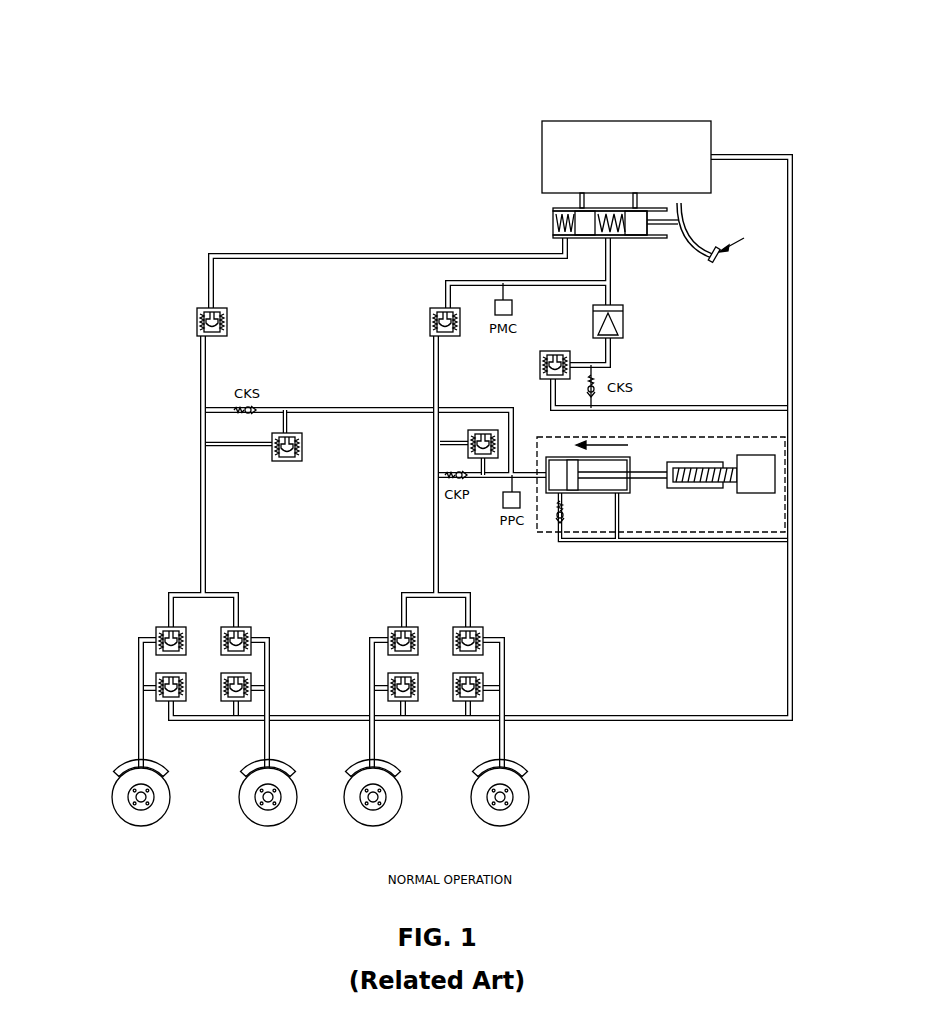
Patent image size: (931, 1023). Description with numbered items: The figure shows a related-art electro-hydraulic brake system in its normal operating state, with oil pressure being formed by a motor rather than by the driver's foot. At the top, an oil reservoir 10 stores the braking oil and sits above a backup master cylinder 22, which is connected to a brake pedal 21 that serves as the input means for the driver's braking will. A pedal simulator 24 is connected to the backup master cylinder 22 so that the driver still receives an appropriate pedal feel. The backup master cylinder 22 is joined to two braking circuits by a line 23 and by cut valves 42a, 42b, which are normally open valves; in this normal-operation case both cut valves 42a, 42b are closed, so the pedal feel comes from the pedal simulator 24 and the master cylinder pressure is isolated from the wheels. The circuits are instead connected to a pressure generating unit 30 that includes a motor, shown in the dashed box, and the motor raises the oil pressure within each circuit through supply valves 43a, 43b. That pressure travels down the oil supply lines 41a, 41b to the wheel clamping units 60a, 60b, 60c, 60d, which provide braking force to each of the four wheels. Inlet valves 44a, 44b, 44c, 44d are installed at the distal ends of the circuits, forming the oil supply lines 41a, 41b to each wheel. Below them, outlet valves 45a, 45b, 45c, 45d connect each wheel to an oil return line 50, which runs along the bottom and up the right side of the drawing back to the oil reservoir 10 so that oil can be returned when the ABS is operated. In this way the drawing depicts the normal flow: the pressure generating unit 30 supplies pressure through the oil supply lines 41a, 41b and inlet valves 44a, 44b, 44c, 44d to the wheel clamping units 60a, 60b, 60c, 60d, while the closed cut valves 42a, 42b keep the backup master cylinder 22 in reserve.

The oil reservoir 10 is at (552, 120).
The brake pedal 21 is at (685, 252).
The backup master cylinder 22 is at (553, 210).
The hydraulic line 23 is at (458, 256).
The pedal simulator 24 is at (625, 320).
The pressure generating unit 30 is at (688, 532).
The oil supply line 41a is at (200, 510).
The oil supply line 41b is at (433, 513).
The cut valve 42a is at (228, 320).
The cut valve 42b is at (433, 308).
The first pressure supply valve 43a is at (302, 445).
The second pressure supply valve 43b is at (468, 438).
The inlet valve 44a is at (156, 632).
The inlet valve 44b is at (251, 632).
The inlet valve 44c is at (388, 632).
The inlet valve 44d is at (483, 632).
The outlet valve 45a is at (163, 701).
The outlet valve 45b is at (228, 701).
The outlet valve 45c is at (418, 675).
The outlet valve 45d is at (458, 701).
The oil return line 50 is at (788, 625).
The wheel clamping unit 60a is at (132, 770).
The wheel clamping unit 60b is at (282, 770).
The wheel clamping unit 60c is at (388, 770).
The wheel clamping unit 60d is at (515, 770).